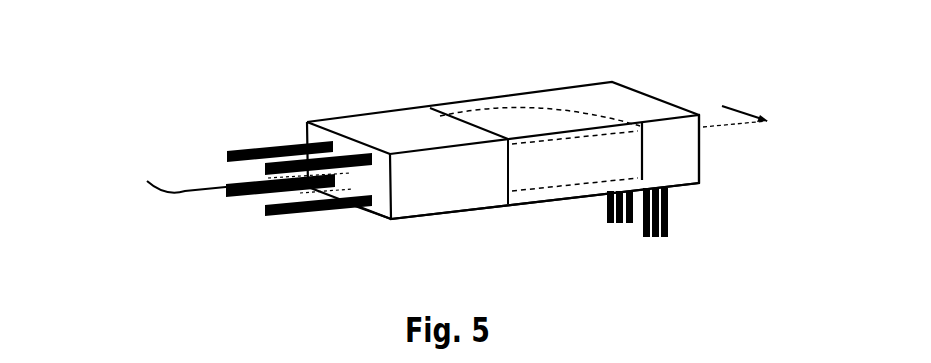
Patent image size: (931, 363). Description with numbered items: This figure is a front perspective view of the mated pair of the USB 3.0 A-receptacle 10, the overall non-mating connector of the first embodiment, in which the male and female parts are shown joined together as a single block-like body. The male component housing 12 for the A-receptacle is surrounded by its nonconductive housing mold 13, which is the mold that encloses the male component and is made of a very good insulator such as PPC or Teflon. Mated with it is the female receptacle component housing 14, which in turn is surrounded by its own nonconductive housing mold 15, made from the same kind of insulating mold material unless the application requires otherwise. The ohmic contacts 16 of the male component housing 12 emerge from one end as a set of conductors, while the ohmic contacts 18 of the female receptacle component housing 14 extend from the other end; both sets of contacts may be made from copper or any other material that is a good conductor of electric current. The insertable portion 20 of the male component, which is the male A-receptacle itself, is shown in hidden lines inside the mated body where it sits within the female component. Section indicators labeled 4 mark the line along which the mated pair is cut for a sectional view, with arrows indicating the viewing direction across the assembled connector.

The USB 3.0 A-receptacle 10 is at (283, 79).
The male component housing 12 is at (353, 116).
The nonconductive housing mold 13 is at (435, 203).
The female receptacle component housing 14 is at (587, 84).
The nonconductive housing mold 15 is at (699, 158).
The ohmic contacts 16 is at (282, 148).
The ohmic contacts 18 is at (610, 222).
The insertable portion 20 is at (507, 107).
The section line 4- 4 is at (450, 138).